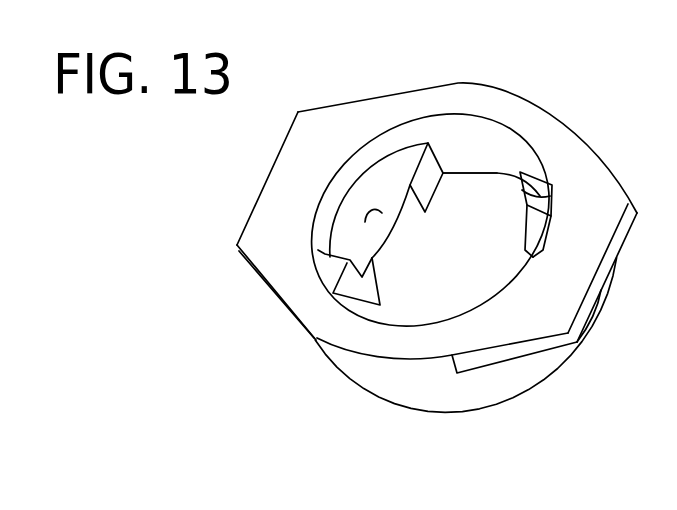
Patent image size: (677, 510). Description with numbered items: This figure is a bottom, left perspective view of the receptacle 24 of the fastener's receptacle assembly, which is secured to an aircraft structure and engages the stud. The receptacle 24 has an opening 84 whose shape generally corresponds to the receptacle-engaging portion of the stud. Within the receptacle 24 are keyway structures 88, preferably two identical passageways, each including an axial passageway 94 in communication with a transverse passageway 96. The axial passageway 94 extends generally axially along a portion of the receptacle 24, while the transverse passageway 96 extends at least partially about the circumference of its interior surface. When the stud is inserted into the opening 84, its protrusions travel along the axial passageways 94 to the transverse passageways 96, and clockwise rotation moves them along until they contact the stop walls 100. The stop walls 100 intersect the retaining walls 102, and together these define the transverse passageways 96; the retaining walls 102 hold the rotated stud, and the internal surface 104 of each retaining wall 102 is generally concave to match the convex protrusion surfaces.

The receptacle 24 is at (549, 103).
The opening 84 is at (522, 186).
The keyway structures 88 is at (396, 141).
The axial passageway 94 is at (482, 161).
The transverse passageway 96 is at (341, 192).
The stop walls 100 is at (365, 266).
The retaining walls 102 is at (527, 243).
The internal surface 104 is at (380, 192).